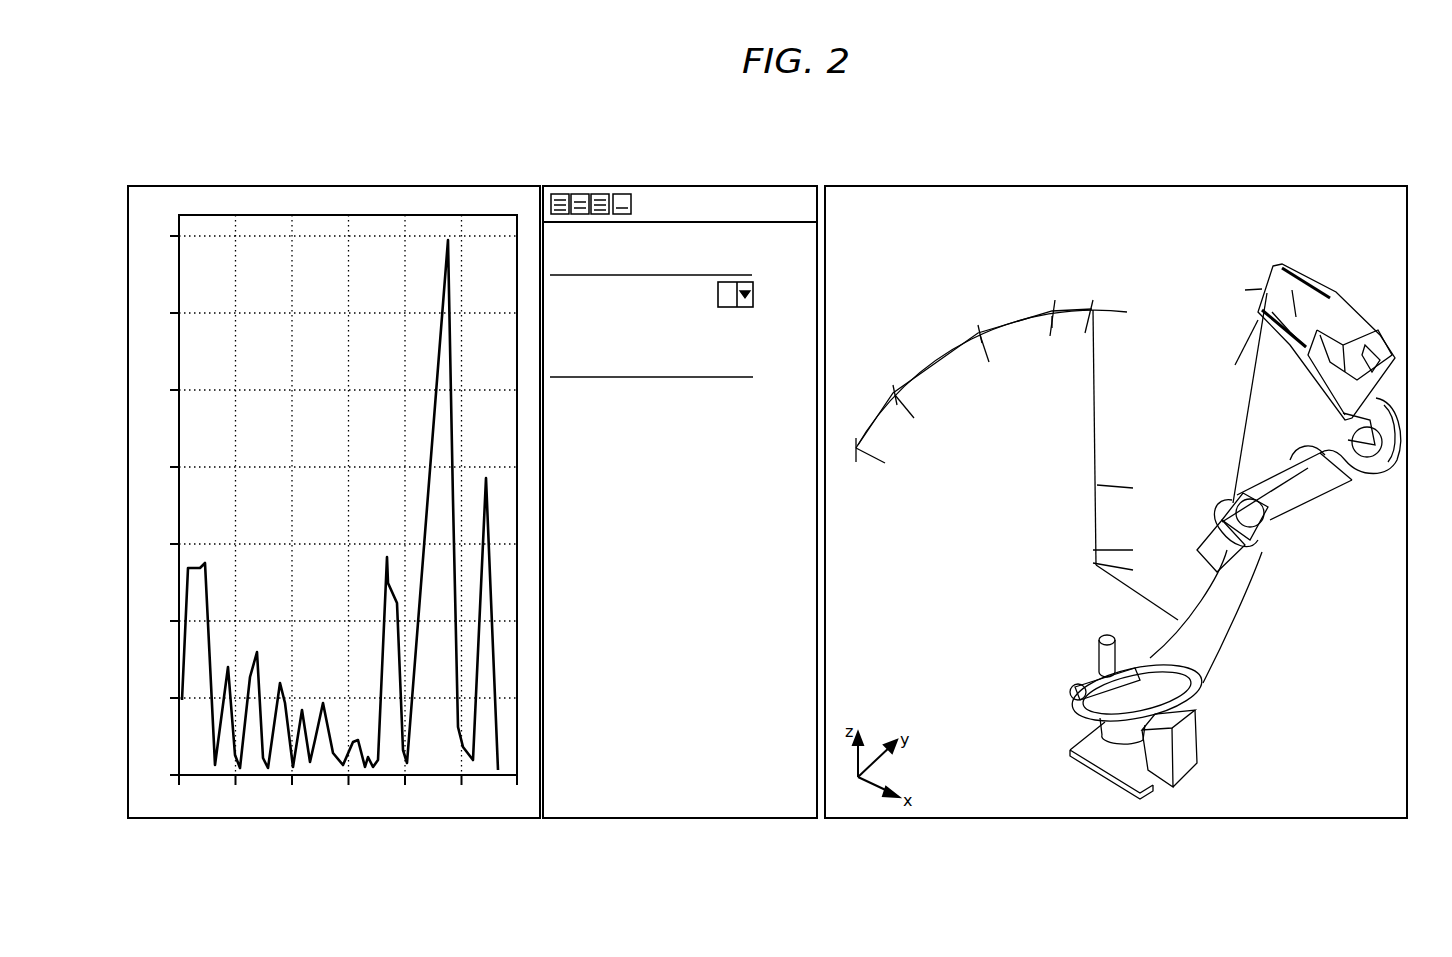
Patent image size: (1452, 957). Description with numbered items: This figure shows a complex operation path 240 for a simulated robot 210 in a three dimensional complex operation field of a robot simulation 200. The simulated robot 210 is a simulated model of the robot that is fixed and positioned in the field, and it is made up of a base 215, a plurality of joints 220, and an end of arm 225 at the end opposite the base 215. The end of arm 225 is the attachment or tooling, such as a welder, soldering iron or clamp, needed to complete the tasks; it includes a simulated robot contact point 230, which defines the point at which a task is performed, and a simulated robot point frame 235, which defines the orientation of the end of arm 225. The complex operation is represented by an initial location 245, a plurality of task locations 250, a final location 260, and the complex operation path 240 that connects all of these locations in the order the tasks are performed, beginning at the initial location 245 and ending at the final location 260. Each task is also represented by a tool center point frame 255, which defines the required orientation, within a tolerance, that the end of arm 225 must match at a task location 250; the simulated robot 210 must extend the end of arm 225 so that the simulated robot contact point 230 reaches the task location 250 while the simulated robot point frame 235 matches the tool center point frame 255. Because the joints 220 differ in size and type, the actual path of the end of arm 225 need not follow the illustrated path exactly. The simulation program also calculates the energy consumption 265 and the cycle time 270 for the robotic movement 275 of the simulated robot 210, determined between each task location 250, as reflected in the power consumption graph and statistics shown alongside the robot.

The robot simulation 200 is at (811, 115).
The simulated robot 210 is at (1233, 523).
The base 215 is at (1195, 768).
The joints 220 is at (1270, 558).
The end of arm 225 is at (1327, 327).
The simulated robot contact point 230 is at (1260, 295).
The simulated robot point frame 235 is at (1297, 273).
The complex operation path 240 is at (1097, 392).
The initial location 245 is at (856, 448).
The task locations 250 is at (1053, 313).
The tool center point frame 255 is at (1052, 330).
The final location 260 is at (1272, 272).
The energy consumption 265 is at (701, 382).
The cycle time 270 is at (343, 506).
The robotic movement 275 is at (447, 260).